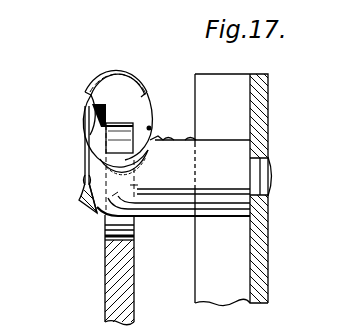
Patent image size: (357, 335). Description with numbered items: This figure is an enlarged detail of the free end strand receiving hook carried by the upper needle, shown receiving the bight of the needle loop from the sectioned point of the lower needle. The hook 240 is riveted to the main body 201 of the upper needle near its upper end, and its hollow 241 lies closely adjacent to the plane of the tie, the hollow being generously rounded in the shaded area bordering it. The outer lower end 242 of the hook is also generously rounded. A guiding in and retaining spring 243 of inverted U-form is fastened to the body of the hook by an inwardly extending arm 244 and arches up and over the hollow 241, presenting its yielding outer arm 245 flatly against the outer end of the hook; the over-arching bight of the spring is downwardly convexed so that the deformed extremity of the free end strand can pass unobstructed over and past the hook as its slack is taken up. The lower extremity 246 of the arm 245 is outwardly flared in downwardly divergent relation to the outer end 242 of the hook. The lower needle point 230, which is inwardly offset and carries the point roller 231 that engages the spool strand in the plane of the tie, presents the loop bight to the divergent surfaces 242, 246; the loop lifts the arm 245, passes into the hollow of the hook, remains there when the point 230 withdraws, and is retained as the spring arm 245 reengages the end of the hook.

The upper needle main body 201 is at (258, 128).
The lower needle point 230 is at (113, 267).
The point roller 231 is at (101, 122).
The hook 240 is at (93, 158).
The hollow of the hook 241 is at (150, 127).
The outer lower end of the hook 242 is at (115, 192).
The guiding in and retaining spring 243 is at (108, 78).
The inwardly extending arm 244 is at (178, 138).
The yielding outer arm 245 is at (86, 176).
The lower extremity of the spring arm 246 is at (81, 201).